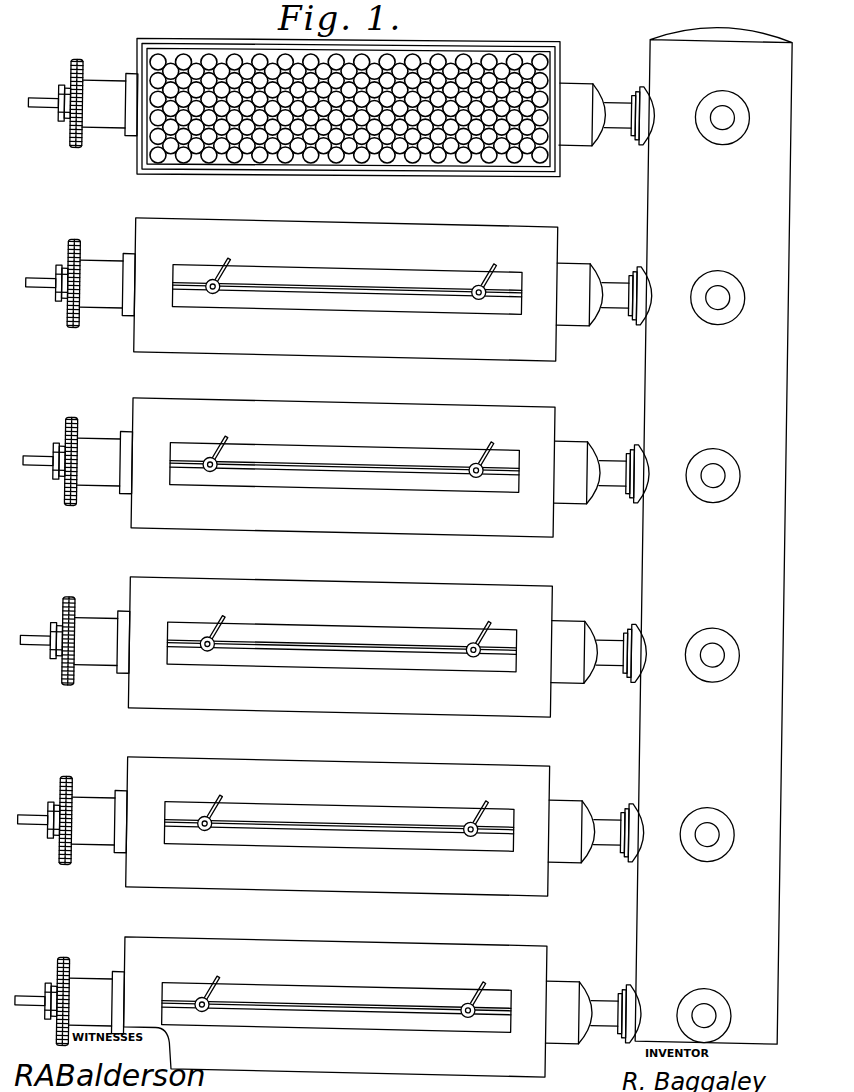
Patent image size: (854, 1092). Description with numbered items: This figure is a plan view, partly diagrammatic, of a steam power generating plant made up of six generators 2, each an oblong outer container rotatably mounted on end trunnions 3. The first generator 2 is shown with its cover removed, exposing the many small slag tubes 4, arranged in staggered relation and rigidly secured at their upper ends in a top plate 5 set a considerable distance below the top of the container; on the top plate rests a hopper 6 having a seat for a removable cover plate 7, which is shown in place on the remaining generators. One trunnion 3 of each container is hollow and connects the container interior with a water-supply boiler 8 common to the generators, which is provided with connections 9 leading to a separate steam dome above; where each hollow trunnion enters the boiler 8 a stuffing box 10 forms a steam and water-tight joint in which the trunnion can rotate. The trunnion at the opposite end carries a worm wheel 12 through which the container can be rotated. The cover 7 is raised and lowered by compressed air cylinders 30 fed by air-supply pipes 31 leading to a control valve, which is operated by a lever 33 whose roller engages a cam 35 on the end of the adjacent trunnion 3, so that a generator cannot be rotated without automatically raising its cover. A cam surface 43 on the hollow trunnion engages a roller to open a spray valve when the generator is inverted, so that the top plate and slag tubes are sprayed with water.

The generator 2 is at (233, 42).
The end trunnion 3 is at (332, 120).
The slag tube 4 is at (437, 62).
The top plate 5 is at (450, 63).
The hopper 6 is at (487, 50).
The cover plate 7 is at (347, 269).
The water-supply boiler 8 is at (713, 535).
The connections 9 is at (716, 114).
The stuffing box 10 is at (631, 123).
The worm wheel 12 is at (82, 92).
The compressed air cylinder 30 is at (347, 308).
The air-supply pipe 31 is at (363, 262).
The lever 33 is at (44, 94).
The cam 35 is at (51, 110).
The cam surface 43 is at (595, 107).